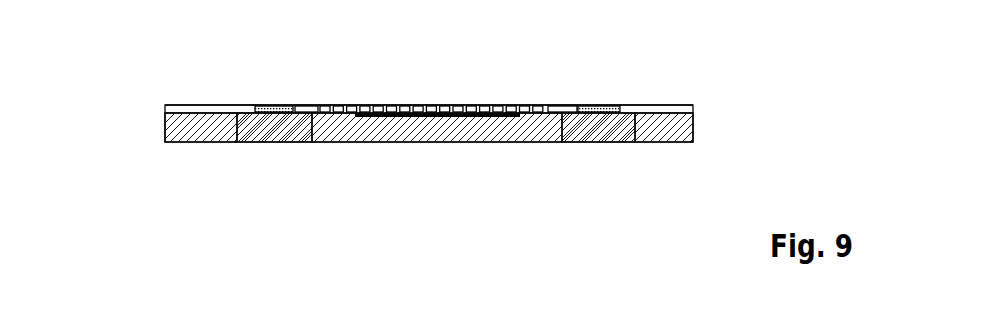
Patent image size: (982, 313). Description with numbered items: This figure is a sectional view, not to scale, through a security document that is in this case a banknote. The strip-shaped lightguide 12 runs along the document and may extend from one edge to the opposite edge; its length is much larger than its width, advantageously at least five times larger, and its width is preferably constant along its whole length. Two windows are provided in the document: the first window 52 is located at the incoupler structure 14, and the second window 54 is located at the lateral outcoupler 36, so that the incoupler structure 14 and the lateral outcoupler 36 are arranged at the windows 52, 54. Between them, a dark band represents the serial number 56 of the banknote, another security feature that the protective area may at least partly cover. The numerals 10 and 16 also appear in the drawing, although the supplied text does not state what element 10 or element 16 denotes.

The carrier substrate 10 is at (380, 129).
The lightguide 12 is at (432, 86).
The incoupler structure 14 is at (261, 85).
The cover layer 16 is at (429, 62).
The lateral outcoupler 36 is at (612, 85).
The first window 52 is at (262, 156).
The second window 54 is at (611, 156).
The serial number 56 is at (437, 157).